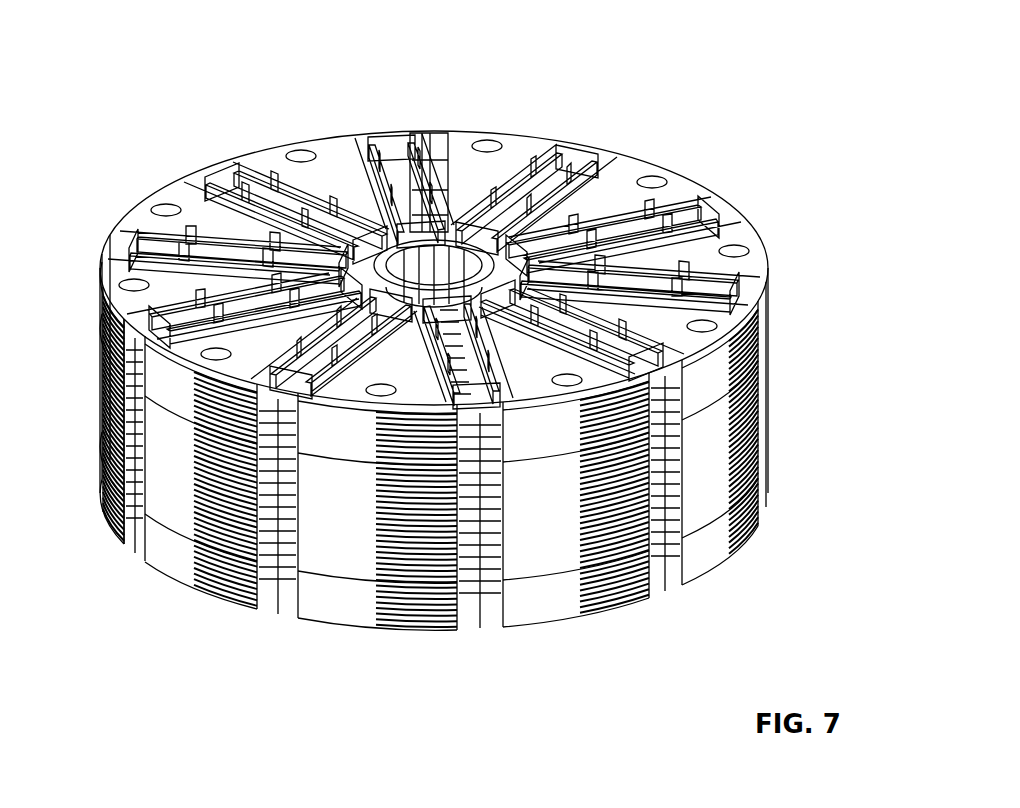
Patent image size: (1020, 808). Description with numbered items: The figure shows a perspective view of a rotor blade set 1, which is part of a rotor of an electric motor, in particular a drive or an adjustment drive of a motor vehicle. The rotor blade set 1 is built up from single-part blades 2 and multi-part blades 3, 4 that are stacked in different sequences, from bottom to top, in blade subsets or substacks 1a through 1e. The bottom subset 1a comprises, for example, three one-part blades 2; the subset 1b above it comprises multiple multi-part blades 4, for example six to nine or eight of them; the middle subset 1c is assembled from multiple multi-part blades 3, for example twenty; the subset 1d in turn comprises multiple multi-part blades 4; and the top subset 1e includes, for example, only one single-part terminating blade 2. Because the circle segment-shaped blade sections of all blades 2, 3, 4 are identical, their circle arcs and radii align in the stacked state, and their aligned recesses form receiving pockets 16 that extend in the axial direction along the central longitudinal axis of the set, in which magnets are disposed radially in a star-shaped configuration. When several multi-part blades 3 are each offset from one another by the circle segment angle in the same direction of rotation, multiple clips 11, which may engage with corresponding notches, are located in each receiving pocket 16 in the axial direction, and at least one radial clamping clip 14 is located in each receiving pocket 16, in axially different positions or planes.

The rotor blade set 1 is at (665, 104).
The blade subset 1a is at (610, 587).
The blade subset 1b is at (740, 530).
The blade subset 1c is at (737, 422).
The blade subset 1d is at (762, 308).
The blade subset 1e is at (740, 230).
The single-part blade 2 is at (133, 217).
The multi-part blade 3 is at (116, 400).
The multi-part blade 4 is at (118, 333).
The clip 11 is at (470, 527).
The radial clamping clip 14 is at (448, 363).
The receiving pocket 16 is at (392, 150).